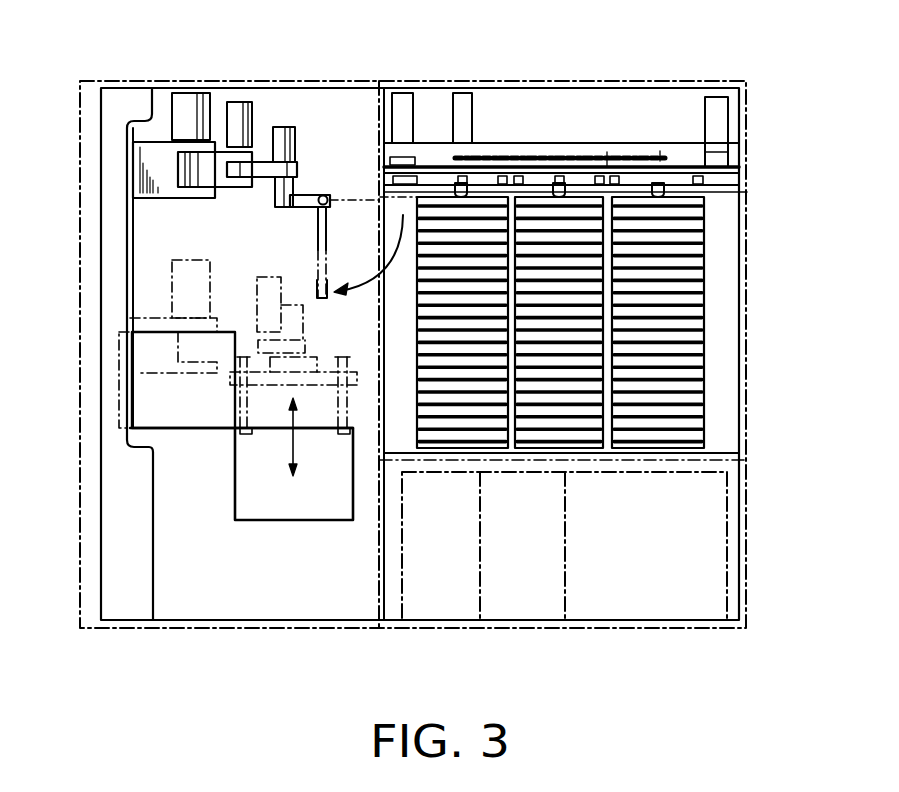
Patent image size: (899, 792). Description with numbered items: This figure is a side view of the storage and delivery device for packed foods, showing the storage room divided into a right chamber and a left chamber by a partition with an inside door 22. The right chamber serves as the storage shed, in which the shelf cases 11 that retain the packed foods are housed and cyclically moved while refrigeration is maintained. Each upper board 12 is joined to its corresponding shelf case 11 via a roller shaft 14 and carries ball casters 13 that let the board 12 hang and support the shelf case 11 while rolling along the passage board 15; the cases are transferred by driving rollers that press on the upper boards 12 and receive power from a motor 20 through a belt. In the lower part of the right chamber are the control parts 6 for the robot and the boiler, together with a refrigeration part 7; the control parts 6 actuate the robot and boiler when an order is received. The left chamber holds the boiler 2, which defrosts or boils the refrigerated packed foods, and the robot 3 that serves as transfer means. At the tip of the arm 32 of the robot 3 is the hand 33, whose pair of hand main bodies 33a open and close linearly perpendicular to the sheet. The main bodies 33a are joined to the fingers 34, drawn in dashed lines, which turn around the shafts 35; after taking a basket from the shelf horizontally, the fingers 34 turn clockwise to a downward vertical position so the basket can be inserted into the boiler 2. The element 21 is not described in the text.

The boiler 2 is at (290, 521).
The robot 3 is at (107, 223).
The control parts 6 is at (517, 603).
The refrigeration part 7 is at (717, 561).
The shelf case 11 is at (703, 375).
The upper board 12 is at (686, 167).
The ball casters 13 is at (705, 188).
The roller shaft 14 is at (665, 198).
The passage board 15 is at (707, 193).
The motor 20 is at (464, 88).
The upper rail 21 is at (576, 143).
The inside door 22 is at (377, 300).
The arm 32 is at (220, 147).
The hand 33 is at (310, 192).
The hand main bodies 33a is at (310, 207).
The fingers 34 is at (358, 197).
The shafts 35 is at (323, 195).